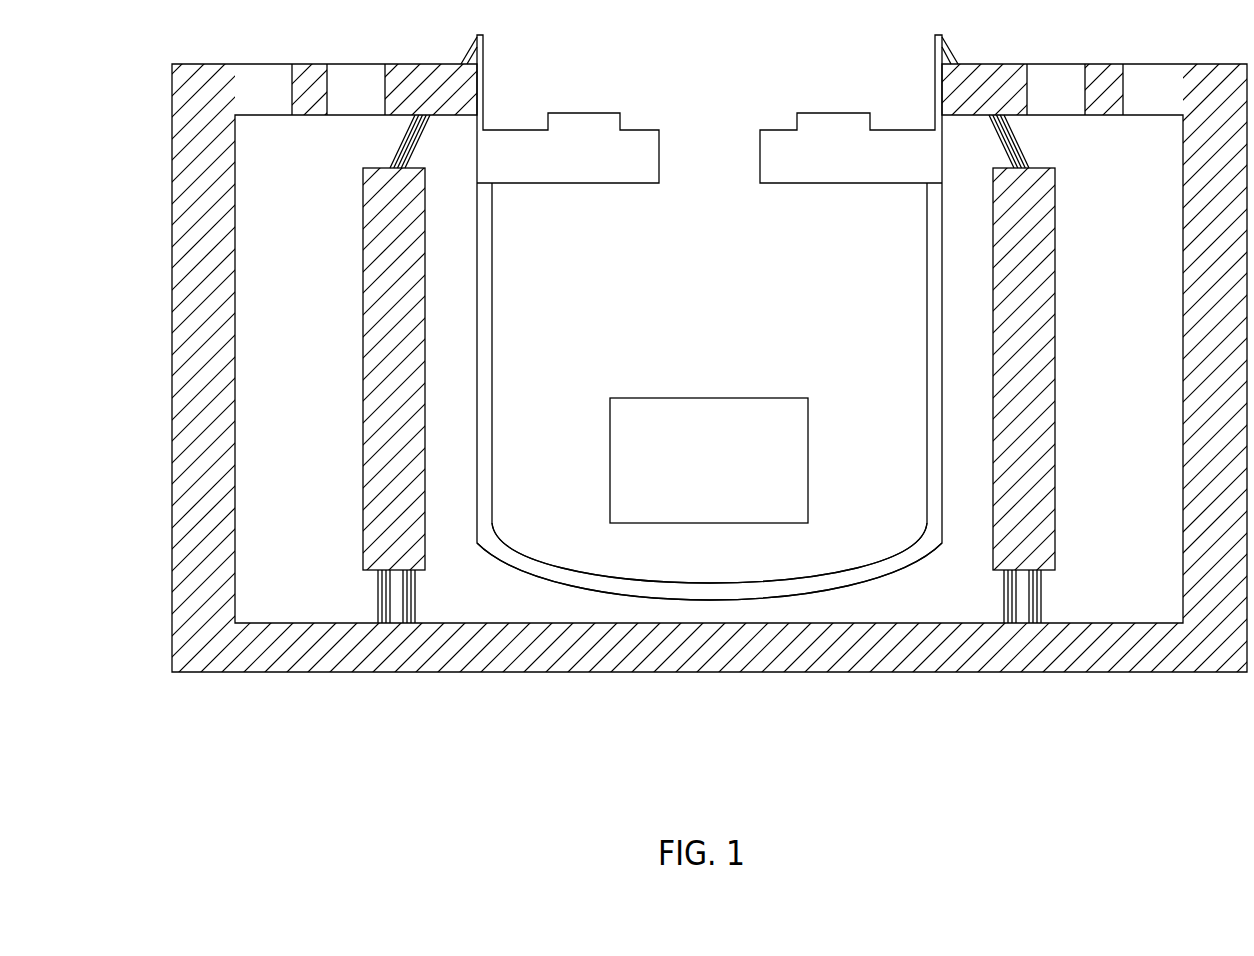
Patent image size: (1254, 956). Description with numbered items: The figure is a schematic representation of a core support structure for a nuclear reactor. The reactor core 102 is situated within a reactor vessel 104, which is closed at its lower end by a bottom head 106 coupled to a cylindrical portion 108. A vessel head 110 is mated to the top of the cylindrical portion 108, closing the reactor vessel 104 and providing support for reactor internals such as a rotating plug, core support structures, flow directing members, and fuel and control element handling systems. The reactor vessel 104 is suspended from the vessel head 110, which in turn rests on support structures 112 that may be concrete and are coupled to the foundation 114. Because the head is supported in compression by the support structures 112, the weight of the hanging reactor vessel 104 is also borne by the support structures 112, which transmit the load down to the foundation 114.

The core 102 is at (705, 485).
The reactor vessel 104 is at (900, 553).
The bottom head 106 is at (635, 580).
The cylindrical portion 108 is at (478, 435).
The vessel head 110 is at (532, 150).
The support structures 112 is at (377, 233).
The foundation 114 is at (390, 672).